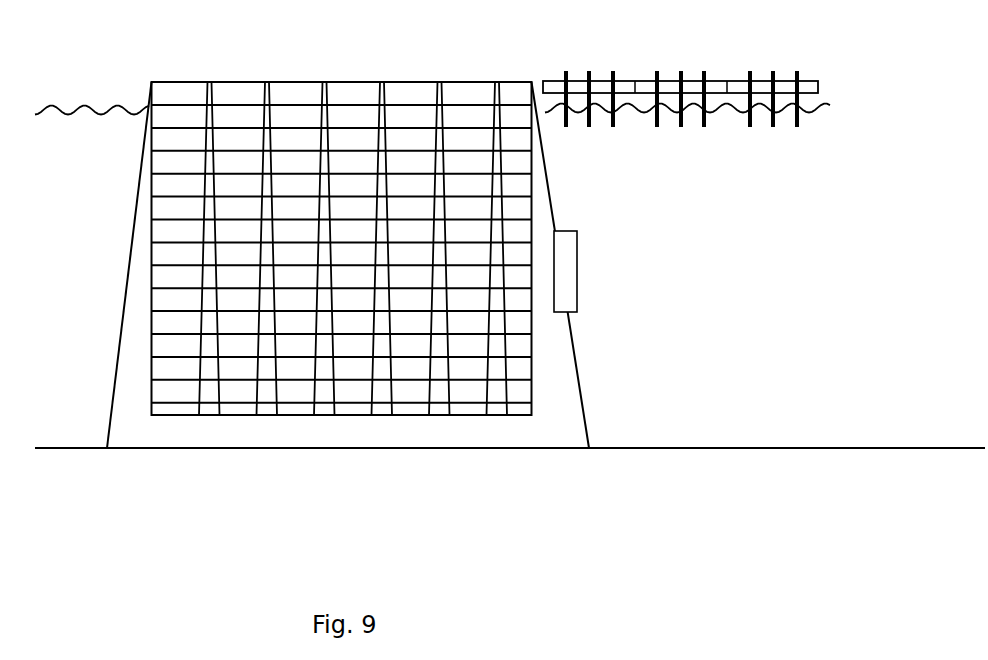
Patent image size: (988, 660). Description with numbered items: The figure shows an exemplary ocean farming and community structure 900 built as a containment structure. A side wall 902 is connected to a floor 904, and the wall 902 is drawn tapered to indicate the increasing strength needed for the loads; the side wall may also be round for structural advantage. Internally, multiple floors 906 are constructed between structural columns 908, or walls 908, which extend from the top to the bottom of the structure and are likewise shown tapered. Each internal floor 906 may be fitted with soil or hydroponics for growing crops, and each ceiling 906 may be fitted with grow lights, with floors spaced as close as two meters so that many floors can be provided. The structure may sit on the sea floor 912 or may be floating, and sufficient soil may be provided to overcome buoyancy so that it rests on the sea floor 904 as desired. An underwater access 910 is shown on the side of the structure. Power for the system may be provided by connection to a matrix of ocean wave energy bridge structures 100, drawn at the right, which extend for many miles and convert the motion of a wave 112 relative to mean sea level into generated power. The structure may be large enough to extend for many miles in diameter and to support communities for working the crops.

The ocean farming and community structure 900 is at (186, 484).
The wall 902 is at (125, 300).
The floor 904 is at (405, 449).
The internal floors 906 is at (173, 105).
The structural columns 908 is at (323, 80).
The underwater access 910 is at (577, 265).
The sea floor 912 is at (705, 448).
The ocean wave energy bridge structures 100 is at (590, 70).
The wave 112 is at (818, 117).